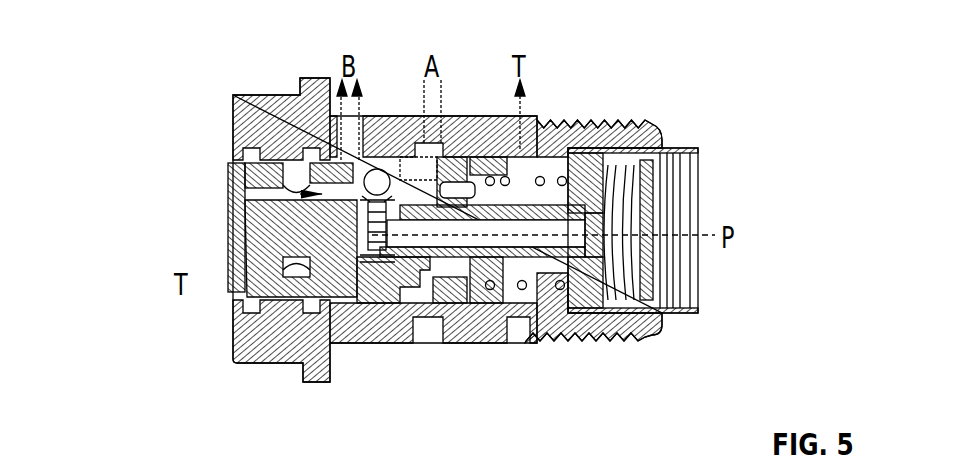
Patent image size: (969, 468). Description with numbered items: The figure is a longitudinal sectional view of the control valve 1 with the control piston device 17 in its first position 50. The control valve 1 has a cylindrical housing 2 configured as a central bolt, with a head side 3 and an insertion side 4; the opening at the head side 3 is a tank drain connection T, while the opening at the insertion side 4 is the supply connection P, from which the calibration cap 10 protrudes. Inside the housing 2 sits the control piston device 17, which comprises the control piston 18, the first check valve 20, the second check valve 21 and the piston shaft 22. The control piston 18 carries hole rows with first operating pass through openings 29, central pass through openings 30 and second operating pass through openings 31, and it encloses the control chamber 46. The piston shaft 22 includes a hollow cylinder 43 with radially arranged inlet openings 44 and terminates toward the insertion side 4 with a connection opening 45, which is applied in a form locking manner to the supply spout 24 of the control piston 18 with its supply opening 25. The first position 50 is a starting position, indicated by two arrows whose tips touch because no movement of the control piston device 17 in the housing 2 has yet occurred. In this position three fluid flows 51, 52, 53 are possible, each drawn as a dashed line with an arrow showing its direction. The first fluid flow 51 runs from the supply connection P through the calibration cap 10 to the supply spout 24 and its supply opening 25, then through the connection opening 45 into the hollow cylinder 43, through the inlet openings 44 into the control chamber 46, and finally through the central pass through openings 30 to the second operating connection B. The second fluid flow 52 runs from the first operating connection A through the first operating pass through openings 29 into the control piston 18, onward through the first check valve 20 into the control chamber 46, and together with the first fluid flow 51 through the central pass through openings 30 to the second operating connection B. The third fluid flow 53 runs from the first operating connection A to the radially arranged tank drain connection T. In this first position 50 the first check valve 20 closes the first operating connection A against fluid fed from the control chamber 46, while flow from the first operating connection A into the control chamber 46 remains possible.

The control valve 1 is at (142, 100).
The housing 2 is at (480, 348).
The head side 3 is at (130, 238).
The insertion side 4 is at (777, 237).
The calibration cap 10 is at (617, 157).
The control piston device 17 is at (425, 318).
The control piston 18 is at (372, 256).
The first check valve 20 is at (412, 222).
The second check valve 21 is at (345, 205).
The piston shaft 22 is at (250, 296).
The supply spout 24 is at (555, 278).
The supply opening 25 is at (596, 252).
The first operating pass through openings 29 is at (455, 136).
The central pass through openings 30 is at (375, 165).
The second operating pass through openings 31 is at (305, 218).
The hollow cylinder 43 is at (496, 240).
The inlet openings 44 is at (366, 275).
The connection opening 45 is at (513, 207).
The control chamber 46 is at (348, 187).
The first position 50 is at (228, 208).
The first fluid flow 51 is at (673, 243).
The second fluid flow 52 is at (440, 152).
The third fluid flow 53 is at (458, 132).